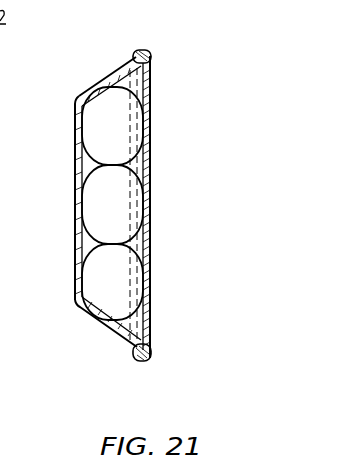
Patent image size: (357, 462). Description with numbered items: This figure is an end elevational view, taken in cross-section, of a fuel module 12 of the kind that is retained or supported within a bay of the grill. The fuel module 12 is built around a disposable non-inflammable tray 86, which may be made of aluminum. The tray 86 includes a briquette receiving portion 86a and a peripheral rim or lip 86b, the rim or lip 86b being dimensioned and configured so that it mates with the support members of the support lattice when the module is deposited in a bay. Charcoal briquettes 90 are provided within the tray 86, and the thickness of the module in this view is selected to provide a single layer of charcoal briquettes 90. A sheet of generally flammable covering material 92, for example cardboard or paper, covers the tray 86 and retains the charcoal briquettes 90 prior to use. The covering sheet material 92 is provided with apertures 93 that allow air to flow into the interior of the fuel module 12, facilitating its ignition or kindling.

The fuel module 12 is at (183, 84).
The tray 86 is at (128, 225).
The briquette receiving portion 86a is at (77, 208).
The peripheral rim or lip 86b is at (138, 362).
The charcoal briquettes 90 is at (152, 137).
The sheet of covering material 92 is at (153, 333).
The apertures 93 is at (148, 245).